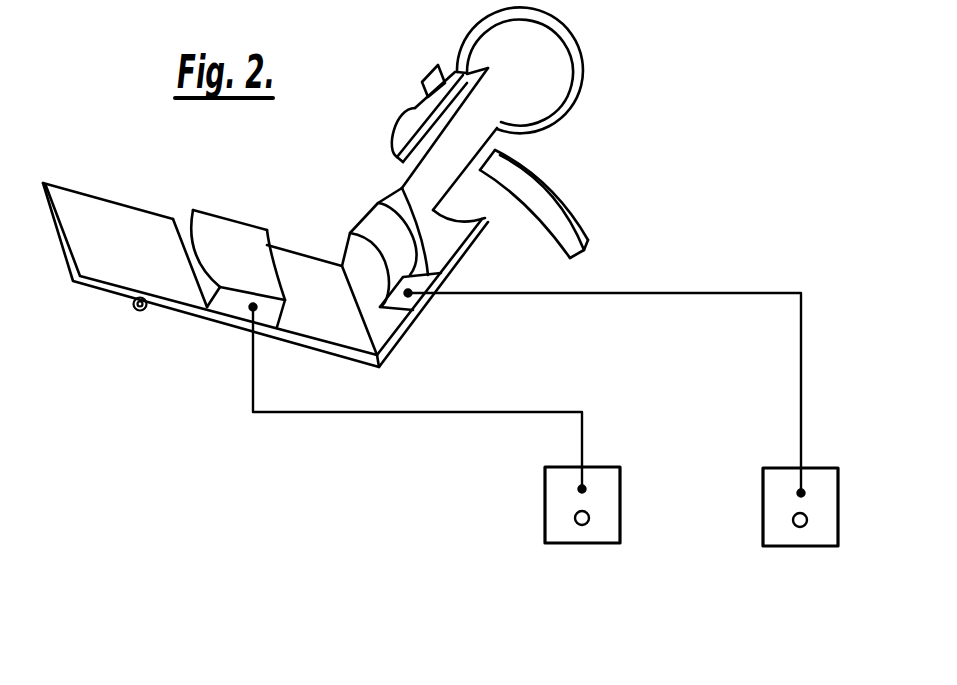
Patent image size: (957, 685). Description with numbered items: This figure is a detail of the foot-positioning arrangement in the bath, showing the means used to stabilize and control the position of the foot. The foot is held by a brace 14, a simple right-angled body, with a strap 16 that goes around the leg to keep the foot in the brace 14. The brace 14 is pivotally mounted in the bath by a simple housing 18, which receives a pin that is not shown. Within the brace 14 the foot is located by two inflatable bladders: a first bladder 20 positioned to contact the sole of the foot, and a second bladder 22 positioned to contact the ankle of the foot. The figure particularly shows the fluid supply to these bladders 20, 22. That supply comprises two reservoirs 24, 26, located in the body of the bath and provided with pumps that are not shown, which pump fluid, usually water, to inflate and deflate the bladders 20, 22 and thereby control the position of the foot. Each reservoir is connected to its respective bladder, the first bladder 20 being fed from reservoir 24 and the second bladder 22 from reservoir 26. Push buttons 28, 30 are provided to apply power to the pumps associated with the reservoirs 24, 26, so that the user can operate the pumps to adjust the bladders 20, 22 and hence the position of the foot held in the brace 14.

The brace 14 is at (555, 77).
The strap 16 is at (415, 108).
The housing 18 is at (130, 298).
The first bladder 20 is at (230, 230).
The second bladder 22 is at (373, 222).
The reservoir 24 is at (555, 502).
The reservoir 26 is at (773, 502).
The push button 28 is at (580, 525).
The push button 30 is at (798, 527).